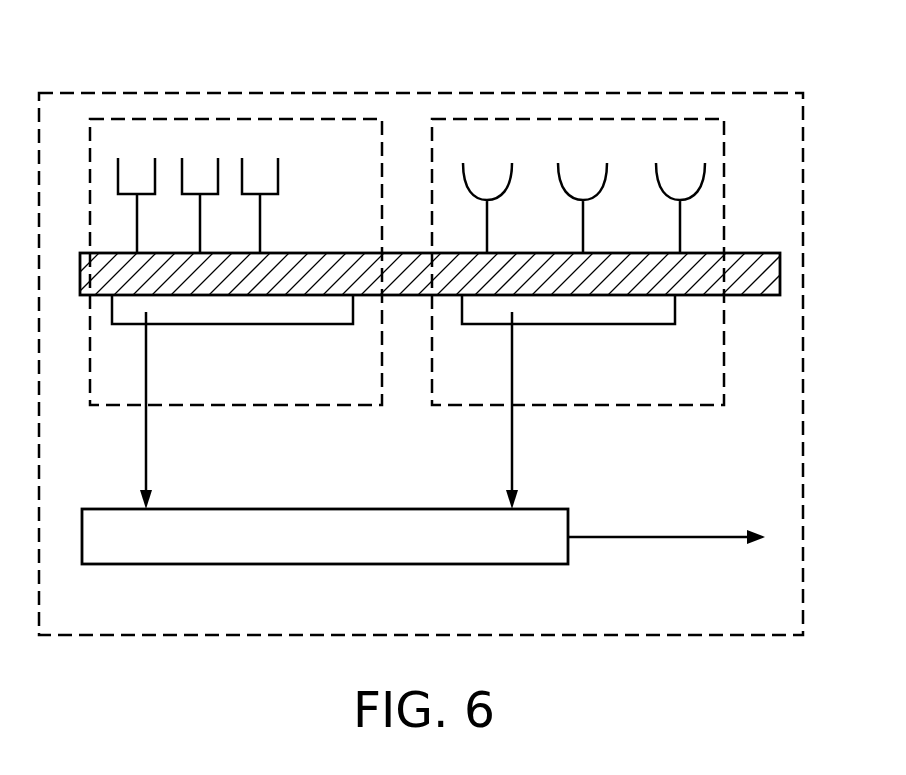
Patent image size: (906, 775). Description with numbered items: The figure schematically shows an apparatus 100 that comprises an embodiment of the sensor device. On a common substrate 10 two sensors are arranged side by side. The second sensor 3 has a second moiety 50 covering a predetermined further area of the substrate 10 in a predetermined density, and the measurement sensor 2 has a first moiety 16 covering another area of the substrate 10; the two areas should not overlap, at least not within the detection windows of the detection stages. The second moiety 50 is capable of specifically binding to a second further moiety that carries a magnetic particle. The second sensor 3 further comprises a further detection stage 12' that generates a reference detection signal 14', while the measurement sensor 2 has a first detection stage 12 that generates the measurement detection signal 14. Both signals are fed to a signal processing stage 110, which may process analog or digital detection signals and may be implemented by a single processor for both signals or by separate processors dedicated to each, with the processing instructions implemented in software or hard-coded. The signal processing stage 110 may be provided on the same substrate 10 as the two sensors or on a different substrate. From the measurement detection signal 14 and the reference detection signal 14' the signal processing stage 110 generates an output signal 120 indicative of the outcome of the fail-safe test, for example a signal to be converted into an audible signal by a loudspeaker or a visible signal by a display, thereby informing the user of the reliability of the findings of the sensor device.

The apparatus 100 is at (118, 93).
The second sensor 3 is at (235, 405).
The measurement sensor 2 is at (579, 405).
The substrate 10 is at (745, 296).
The second moiety 50 is at (279, 176).
The first moiety 16 is at (705, 175).
The further detection stage 12' is at (232, 344).
The first detection stage 12 is at (568, 344).
The reference detection signal 14' is at (183, 410).
The measurement detection signal 14 is at (547, 410).
The signal processing stage 110 is at (325, 565).
The output signal 120 is at (662, 538).